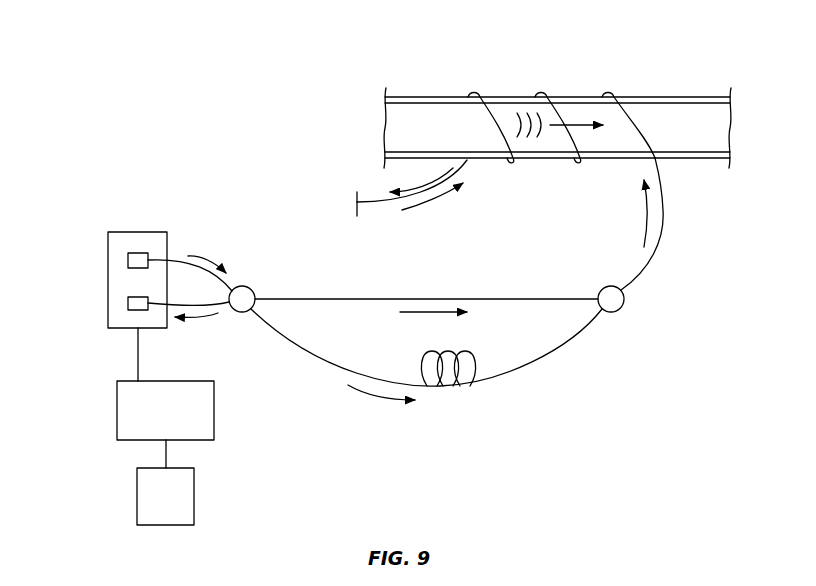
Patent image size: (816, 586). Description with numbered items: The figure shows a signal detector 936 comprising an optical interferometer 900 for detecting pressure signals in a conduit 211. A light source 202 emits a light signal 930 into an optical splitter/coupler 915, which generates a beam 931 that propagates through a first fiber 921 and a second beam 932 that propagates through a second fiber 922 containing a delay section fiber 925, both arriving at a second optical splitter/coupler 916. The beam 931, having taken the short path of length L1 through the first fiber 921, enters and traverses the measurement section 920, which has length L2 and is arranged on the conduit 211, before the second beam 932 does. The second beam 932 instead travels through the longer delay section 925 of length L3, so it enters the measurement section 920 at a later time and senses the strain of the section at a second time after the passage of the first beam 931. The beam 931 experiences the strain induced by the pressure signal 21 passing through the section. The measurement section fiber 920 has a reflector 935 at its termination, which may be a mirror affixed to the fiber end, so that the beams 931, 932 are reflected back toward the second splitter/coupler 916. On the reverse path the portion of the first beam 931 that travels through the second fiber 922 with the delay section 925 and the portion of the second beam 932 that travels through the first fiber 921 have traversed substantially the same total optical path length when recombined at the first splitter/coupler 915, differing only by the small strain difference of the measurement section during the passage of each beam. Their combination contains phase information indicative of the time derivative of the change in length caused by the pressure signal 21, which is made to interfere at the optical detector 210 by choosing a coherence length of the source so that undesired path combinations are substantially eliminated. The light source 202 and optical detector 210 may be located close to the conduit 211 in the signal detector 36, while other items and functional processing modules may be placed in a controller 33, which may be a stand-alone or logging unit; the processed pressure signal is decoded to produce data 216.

The signal detector 936 is at (178, 63).
The optical interferometer 900 is at (442, 77).
The conduit 211 is at (642, 97).
The pressure signal 21 is at (538, 135).
The measurement section 920 is at (542, 95).
The reflector 935 is at (357, 200).
The length of measurement section L2 is at (665, 181).
The beam 931 is at (436, 313).
The second beam 932 is at (380, 402).
The signal detector 36 is at (118, 232).
The light source 202 is at (128, 262).
The optical detector 210 is at (128, 303).
The light signal 930 is at (208, 256).
The optical splitter/coupler 915 is at (256, 285).
The second optical splitter/coupler 916 is at (618, 309).
The first fiber 921 is at (435, 298).
The short path length L1 is at (528, 297).
The second fiber 922 is at (333, 370).
The delay section length L3 is at (566, 357).
The delay section fiber 925 is at (457, 387).
The controller 33 is at (117, 401).
The data 216 is at (194, 478).